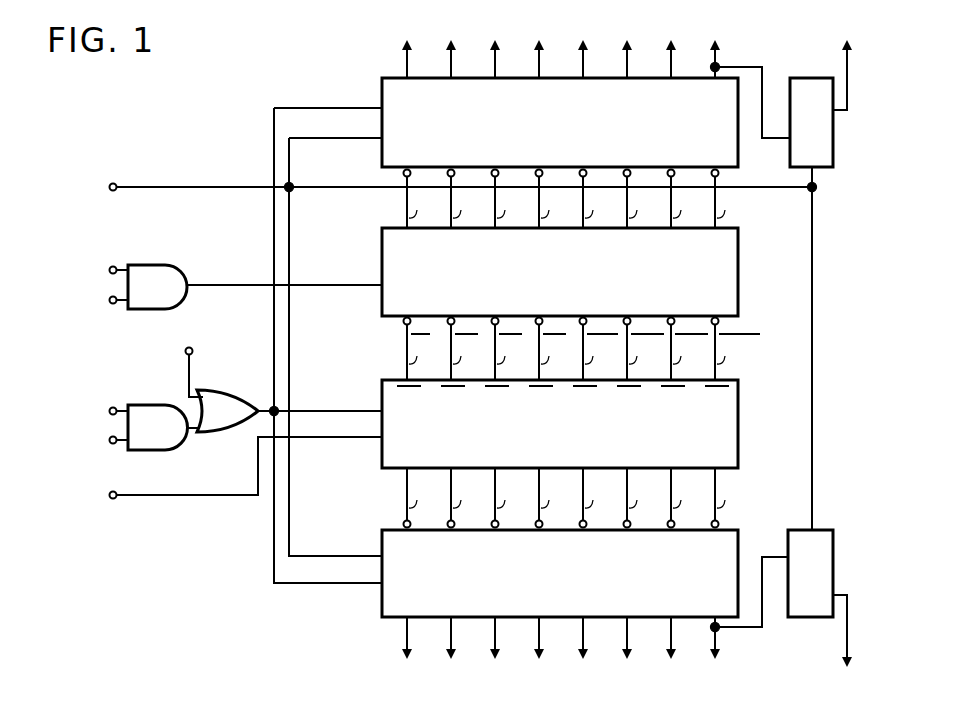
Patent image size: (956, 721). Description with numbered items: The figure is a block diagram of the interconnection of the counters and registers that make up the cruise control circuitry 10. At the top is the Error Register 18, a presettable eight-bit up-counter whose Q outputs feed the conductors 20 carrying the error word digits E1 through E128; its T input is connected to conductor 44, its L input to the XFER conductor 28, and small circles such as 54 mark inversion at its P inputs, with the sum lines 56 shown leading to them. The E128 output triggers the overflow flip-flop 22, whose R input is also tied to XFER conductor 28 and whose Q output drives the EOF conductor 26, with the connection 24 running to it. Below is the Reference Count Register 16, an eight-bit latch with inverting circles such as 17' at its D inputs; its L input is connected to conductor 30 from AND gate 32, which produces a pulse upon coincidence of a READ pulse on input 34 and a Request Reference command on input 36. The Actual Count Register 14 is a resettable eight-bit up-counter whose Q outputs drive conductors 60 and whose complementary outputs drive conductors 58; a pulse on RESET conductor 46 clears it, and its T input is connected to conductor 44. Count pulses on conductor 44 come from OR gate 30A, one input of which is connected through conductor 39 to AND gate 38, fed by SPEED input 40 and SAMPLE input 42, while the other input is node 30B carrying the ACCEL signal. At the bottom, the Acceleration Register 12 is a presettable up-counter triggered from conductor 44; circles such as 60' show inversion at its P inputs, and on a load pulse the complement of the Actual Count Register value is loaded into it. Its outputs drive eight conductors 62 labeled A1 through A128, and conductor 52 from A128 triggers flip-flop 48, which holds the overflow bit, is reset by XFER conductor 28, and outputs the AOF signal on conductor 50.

The cruise control circuitry 10 is at (197, 607).
The Acceleration Register 12 is at (382, 532).
The Actual Count Register 14 is at (382, 382).
The Reference Count Register 16 is at (382, 230).
The inversion circle 17' is at (531, 319).
The Error Register 18 is at (382, 80).
The conductors 20 is at (398, 46).
The overflow flip-flop 22 is at (790, 162).
The line from E128 output to flip-flop 24 is at (720, 42).
The EOF conductor 26 is at (843, 46).
The XFER conductor 28 is at (120, 185).
The conductor 30 is at (222, 288).
The OR gate 30A is at (238, 440).
The node 30B is at (193, 355).
The AND gate 32 is at (178, 276).
The READ input 34 is at (118, 267).
The Request Reference input 36 is at (116, 304).
The AND gate 38 is at (144, 404).
The conductor 39 is at (188, 432).
The SPEED input 40 is at (126, 398).
The SAMPLE input 42 is at (115, 444).
The conductor 44 is at (271, 406).
The RESET conductor 46 is at (118, 498).
The flip-flop 48 is at (788, 534).
The conductor 50 is at (847, 644).
The conductor 52 is at (718, 630).
The inversion circle 54 is at (400, 175).
The sum lines S1-S128 56 is at (400, 201).
The conductors 58 is at (400, 346).
The conductors 60 is at (554, 494).
The inversion circle 60' is at (514, 513).
The conductors 62 is at (396, 641).